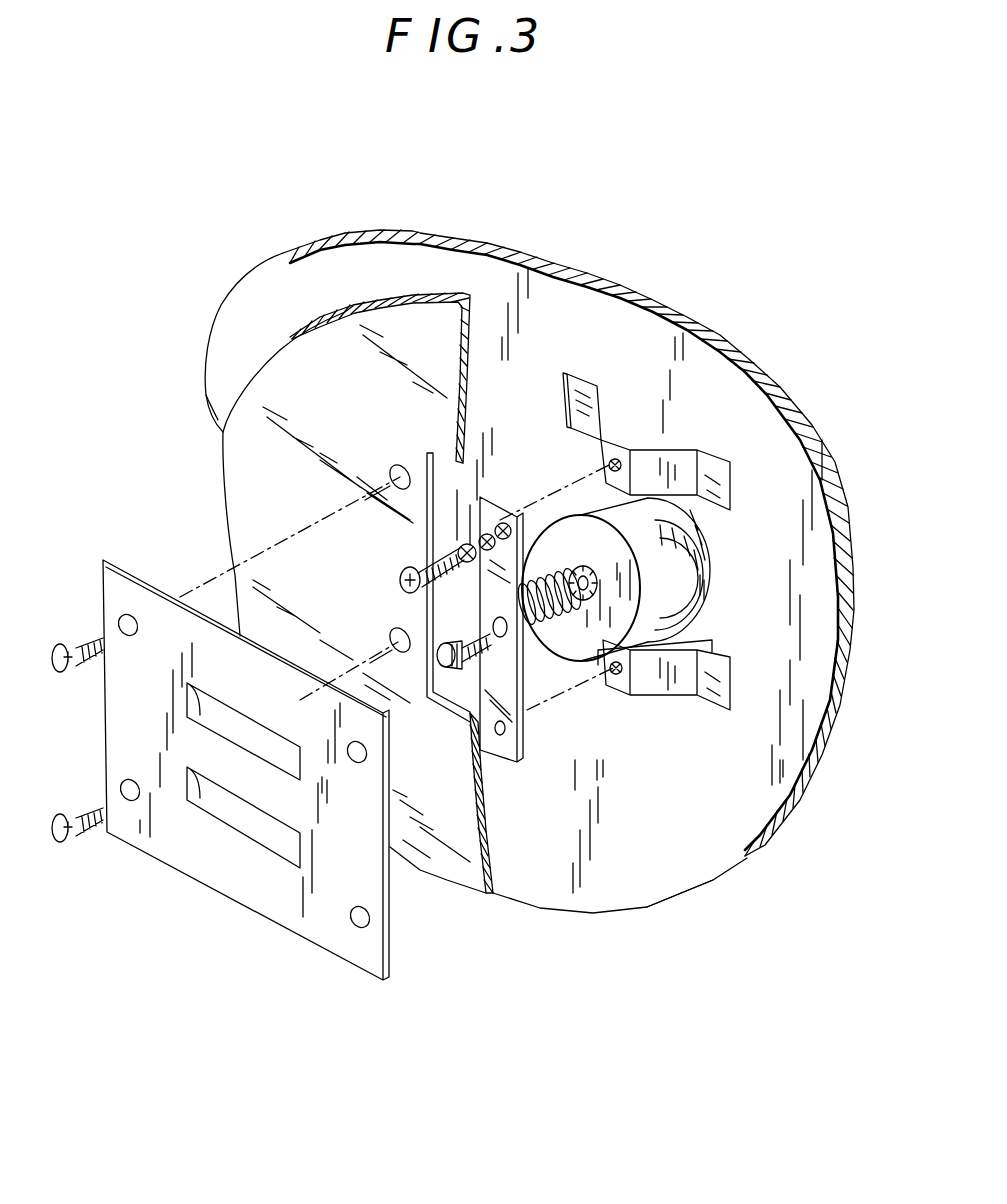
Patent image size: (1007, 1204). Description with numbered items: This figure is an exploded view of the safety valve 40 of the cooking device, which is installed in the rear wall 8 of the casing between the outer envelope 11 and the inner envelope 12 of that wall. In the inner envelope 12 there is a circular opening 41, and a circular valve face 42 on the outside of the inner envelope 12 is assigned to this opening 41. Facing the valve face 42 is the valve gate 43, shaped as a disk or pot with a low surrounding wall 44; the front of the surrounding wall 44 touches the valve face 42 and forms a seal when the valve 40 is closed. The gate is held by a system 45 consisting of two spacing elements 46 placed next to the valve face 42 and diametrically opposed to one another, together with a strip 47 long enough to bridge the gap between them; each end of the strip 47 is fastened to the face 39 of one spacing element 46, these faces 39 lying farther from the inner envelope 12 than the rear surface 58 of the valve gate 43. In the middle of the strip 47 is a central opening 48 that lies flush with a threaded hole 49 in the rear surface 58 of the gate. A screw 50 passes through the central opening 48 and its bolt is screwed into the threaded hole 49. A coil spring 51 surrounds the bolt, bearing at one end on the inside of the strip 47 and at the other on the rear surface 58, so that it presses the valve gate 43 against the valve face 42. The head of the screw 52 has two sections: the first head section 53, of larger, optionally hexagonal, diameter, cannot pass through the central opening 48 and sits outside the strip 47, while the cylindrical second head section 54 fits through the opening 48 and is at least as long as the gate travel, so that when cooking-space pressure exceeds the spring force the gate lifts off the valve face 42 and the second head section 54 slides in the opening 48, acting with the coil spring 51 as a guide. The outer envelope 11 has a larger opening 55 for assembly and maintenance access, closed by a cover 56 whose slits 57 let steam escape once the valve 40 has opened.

The rear wall 8 is at (207, 389).
The outer envelope 11 is at (445, 887).
The inner envelope 12 is at (655, 882).
The face 39 is at (615, 458).
The safety valve 40 is at (742, 318).
The opening 41 is at (697, 600).
The valve face 42 is at (700, 578).
The valve gate 43 is at (712, 641).
The surrounding wall 44 is at (702, 545).
The system 45 is at (645, 533).
The spacing elements 46 is at (662, 569).
The strip 47 is at (513, 497).
The central opening 48 is at (499, 617).
The threaded hole 49 is at (590, 568).
The screw 50 is at (450, 695).
The coil spring 51 is at (507, 730).
The head of the screw 52 is at (444, 646).
The first head section 53 is at (410, 651).
The second head section 54 is at (458, 553).
The opening 55 is at (428, 465).
The cover 56 is at (220, 762).
The slits 57 is at (203, 692).
The rear surface 58 is at (572, 628).